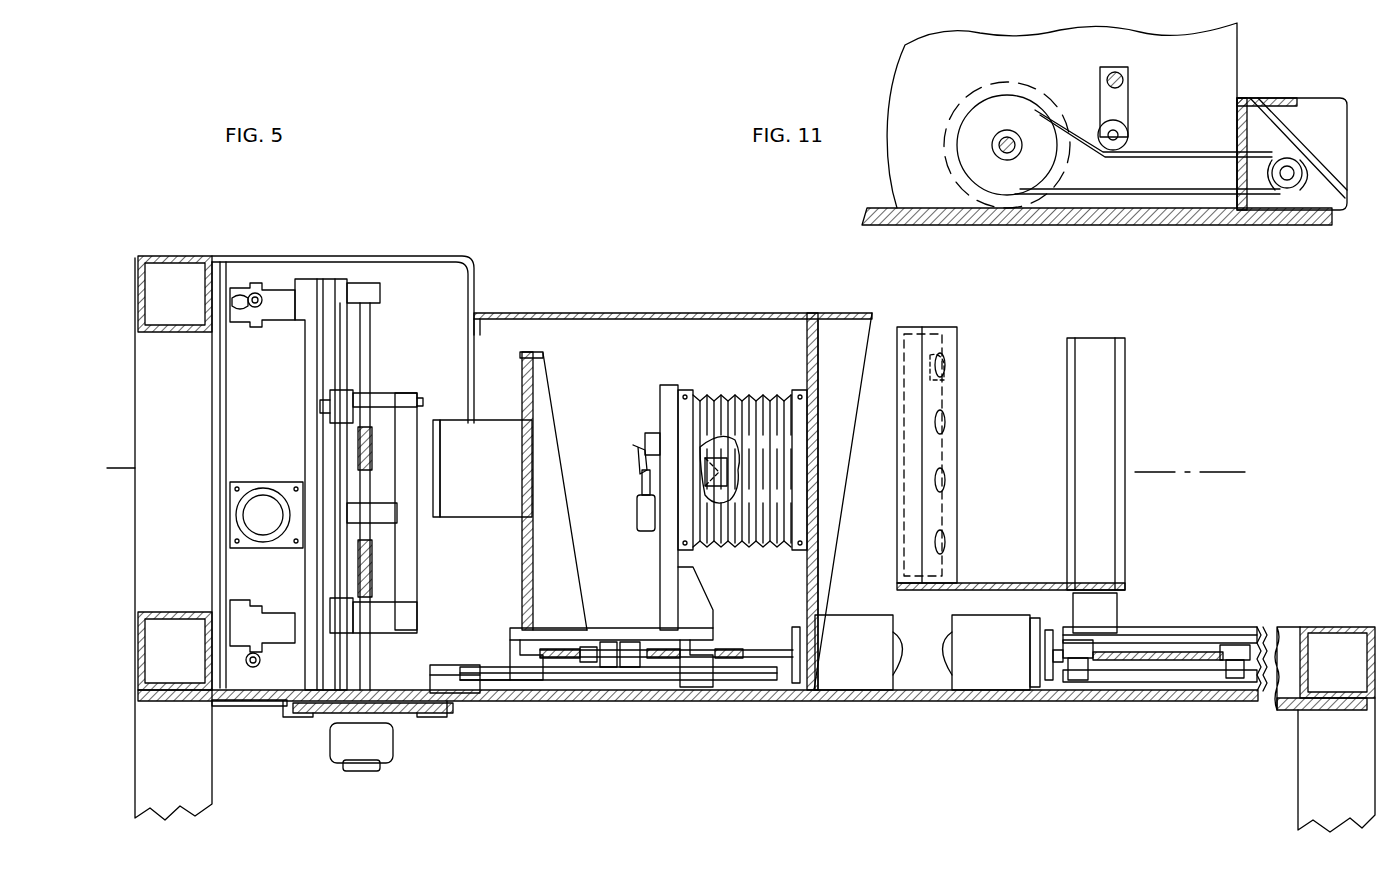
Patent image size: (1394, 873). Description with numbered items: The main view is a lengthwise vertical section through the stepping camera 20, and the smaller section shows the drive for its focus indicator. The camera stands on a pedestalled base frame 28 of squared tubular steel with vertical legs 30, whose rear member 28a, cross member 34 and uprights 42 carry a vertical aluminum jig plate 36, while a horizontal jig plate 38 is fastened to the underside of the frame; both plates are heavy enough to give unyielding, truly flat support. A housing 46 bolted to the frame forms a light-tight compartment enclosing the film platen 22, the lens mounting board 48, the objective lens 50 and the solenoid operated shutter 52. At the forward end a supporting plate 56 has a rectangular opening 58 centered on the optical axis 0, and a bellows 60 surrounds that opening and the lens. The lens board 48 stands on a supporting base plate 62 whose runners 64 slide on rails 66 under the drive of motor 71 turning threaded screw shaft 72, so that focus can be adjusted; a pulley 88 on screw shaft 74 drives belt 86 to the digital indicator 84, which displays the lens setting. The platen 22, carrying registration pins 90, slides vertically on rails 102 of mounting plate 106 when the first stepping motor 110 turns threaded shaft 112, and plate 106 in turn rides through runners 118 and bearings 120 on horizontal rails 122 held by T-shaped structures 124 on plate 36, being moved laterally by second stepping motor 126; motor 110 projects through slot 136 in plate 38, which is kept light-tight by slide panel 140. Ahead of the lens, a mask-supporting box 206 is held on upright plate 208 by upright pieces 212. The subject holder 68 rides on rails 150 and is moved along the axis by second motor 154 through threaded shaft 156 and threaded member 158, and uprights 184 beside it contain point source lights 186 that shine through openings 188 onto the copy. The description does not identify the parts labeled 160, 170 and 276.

In FIG. 5, the optical axis 0 is at (679, 473).
In FIG. 5, the stepping camera 20 is at (690, 294).
In FIG. 5, the film platen 22 is at (400, 565).
In FIG. 5, the base frame 28 is at (1325, 729).
In FIG. 11, the base frame 28 is at (1347, 136).
In FIG. 5, the rear member of the horizontal frame 28a is at (145, 612).
In FIG. 5, the vertical legs 30 is at (135, 752).
In FIG. 5, the cross member 34 is at (178, 256).
In FIG. 5, the vertical jig plate 36 is at (212, 396).
In FIG. 11, the horizontal jig plate 38 is at (1198, 225).
In FIG. 5, the uprights 42 is at (926, 690).
In FIG. 5, the housing 46 is at (512, 310).
In FIG. 5, the lens mounting board 48 is at (672, 385).
In FIG. 5, the objective lens 50 is at (714, 473).
In FIG. 5, the solenoid operated shutter 52 is at (658, 432).
In FIG. 5, the supporting plate 56 is at (807, 338).
In FIG. 5, the opening 58 is at (820, 515).
In FIG. 5, the bellows 60 is at (756, 392).
In FIG. 5, the supporting base plate 62 is at (645, 630).
In FIG. 5, the runners 64 is at (510, 637).
In FIG. 5, the rails 66 is at (735, 676).
In FIG. 5, the subject holder 68 is at (1125, 352).
In FIG. 5, the motor 71 is at (860, 690).
In FIG. 5, the threaded screw shaft 72 is at (730, 648).
In FIG. 11, the threaded screw shaft 72 is at (1000, 150).
In FIG. 5, the screw shaft 74 is at (617, 640).
In FIG. 11, the digital indicator 84 is at (1280, 135).
In FIG. 11, the belt 86 is at (1188, 152).
In FIG. 5, the pulley 88 is at (794, 630).
In FIG. 11, the pulley 88 is at (1002, 120).
In FIG. 5, the registration pins 90 is at (423, 392).
In FIG. 5, the cylindrical rails 102 is at (344, 327).
In FIG. 5, the mounting plate 106 is at (306, 416).
In FIG. 5, the first synchronous stepping motor 110 is at (332, 744).
In FIG. 5, the threaded shaft 112 is at (370, 362).
In FIG. 5, the runners 118 is at (283, 316).
In FIG. 5, the linear re-circulating bearings 120 is at (238, 310).
In FIG. 5, the cylindrical rails 122 is at (258, 292).
In FIG. 5, the T-shaped mounting structures 124 is at (232, 706).
In FIG. 5, the second stepping motor 126 is at (272, 482).
In FIG. 5, the slot 136 is at (432, 690).
In FIG. 5, the slide panel 140 is at (300, 717).
In FIG. 5, the cylindrical rails 150 is at (1200, 678).
In FIG. 5, the second motor 154 is at (978, 690).
In FIG. 5, the threaded shaft 156 is at (1172, 660).
In FIG. 5, the threaded member 158 is at (1093, 650).
In FIG. 5, the carriage 160 is at (1210, 635).
In FIG. 5, the pin 170 is at (1067, 355).
In FIG. 5, the uprights 184 is at (943, 328).
In FIG. 5, the point source lights 186 is at (935, 385).
In FIG. 5, the openings 188 is at (945, 424).
In FIG. 5, the rectangular box 206 is at (508, 478).
In FIG. 5, the upright plate 208 is at (540, 365).
In FIG. 5, the upright pieces 212 is at (558, 453).
In FIG. 5, the sensor 276 is at (637, 512).